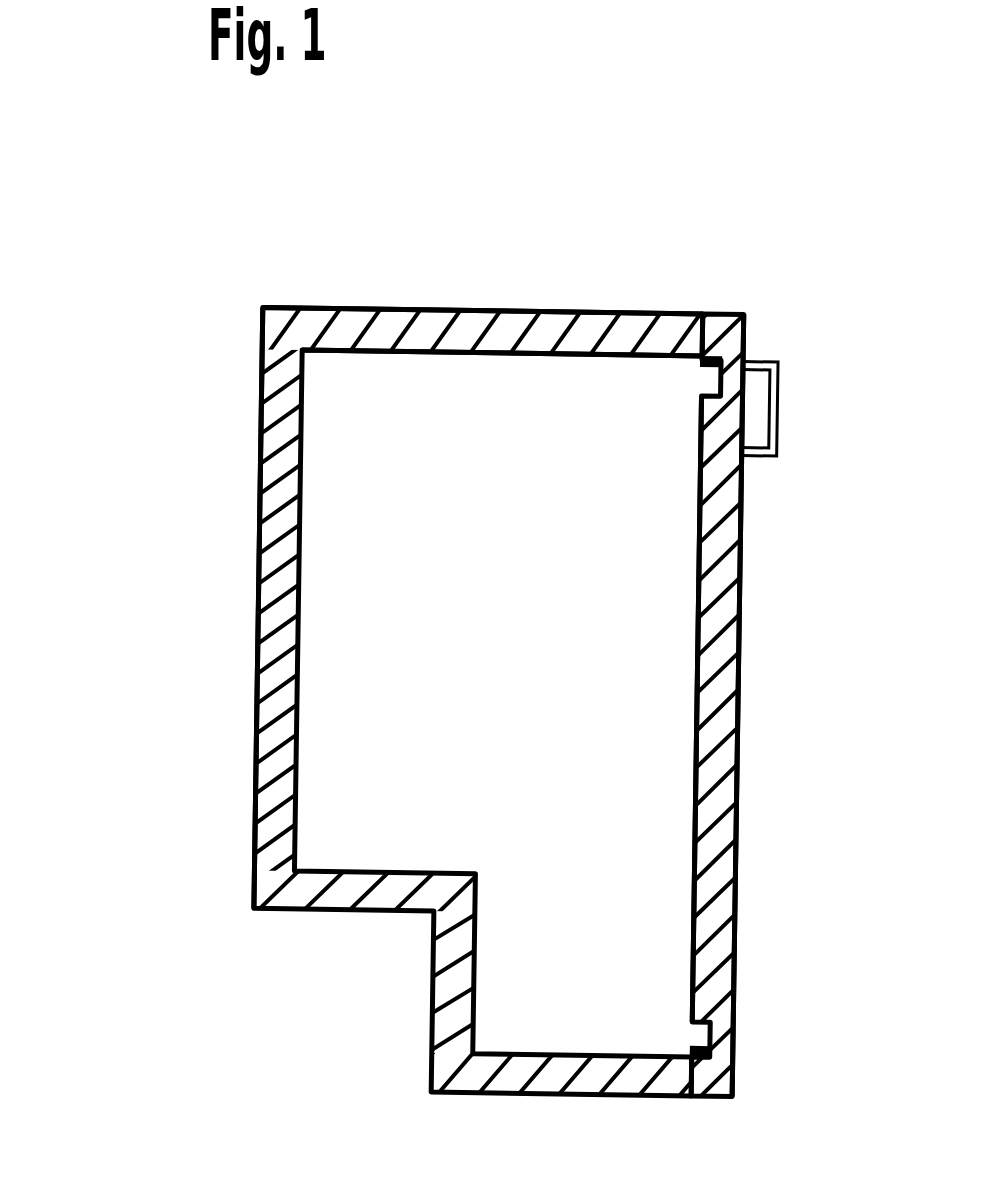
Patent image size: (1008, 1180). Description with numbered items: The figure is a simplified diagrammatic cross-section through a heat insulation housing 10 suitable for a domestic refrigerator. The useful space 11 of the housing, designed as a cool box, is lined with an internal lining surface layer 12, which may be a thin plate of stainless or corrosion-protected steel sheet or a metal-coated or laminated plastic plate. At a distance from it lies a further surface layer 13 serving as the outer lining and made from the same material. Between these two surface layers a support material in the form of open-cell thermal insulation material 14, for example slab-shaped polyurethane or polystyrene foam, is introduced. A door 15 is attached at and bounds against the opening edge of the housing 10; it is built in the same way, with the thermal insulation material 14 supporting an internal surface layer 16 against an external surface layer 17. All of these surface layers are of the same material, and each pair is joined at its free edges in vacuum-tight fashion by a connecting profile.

The heat insulation housing 10 is at (209, 597).
The useful space 11 is at (494, 568).
The internal lining surface layer 12 is at (512, 352).
The further surface layer 13 is at (505, 312).
The thermal insulation material 14 is at (280, 495).
The door 15 is at (750, 565).
The internal surface layer 16 is at (695, 770).
The external surface layer 17 is at (738, 840).